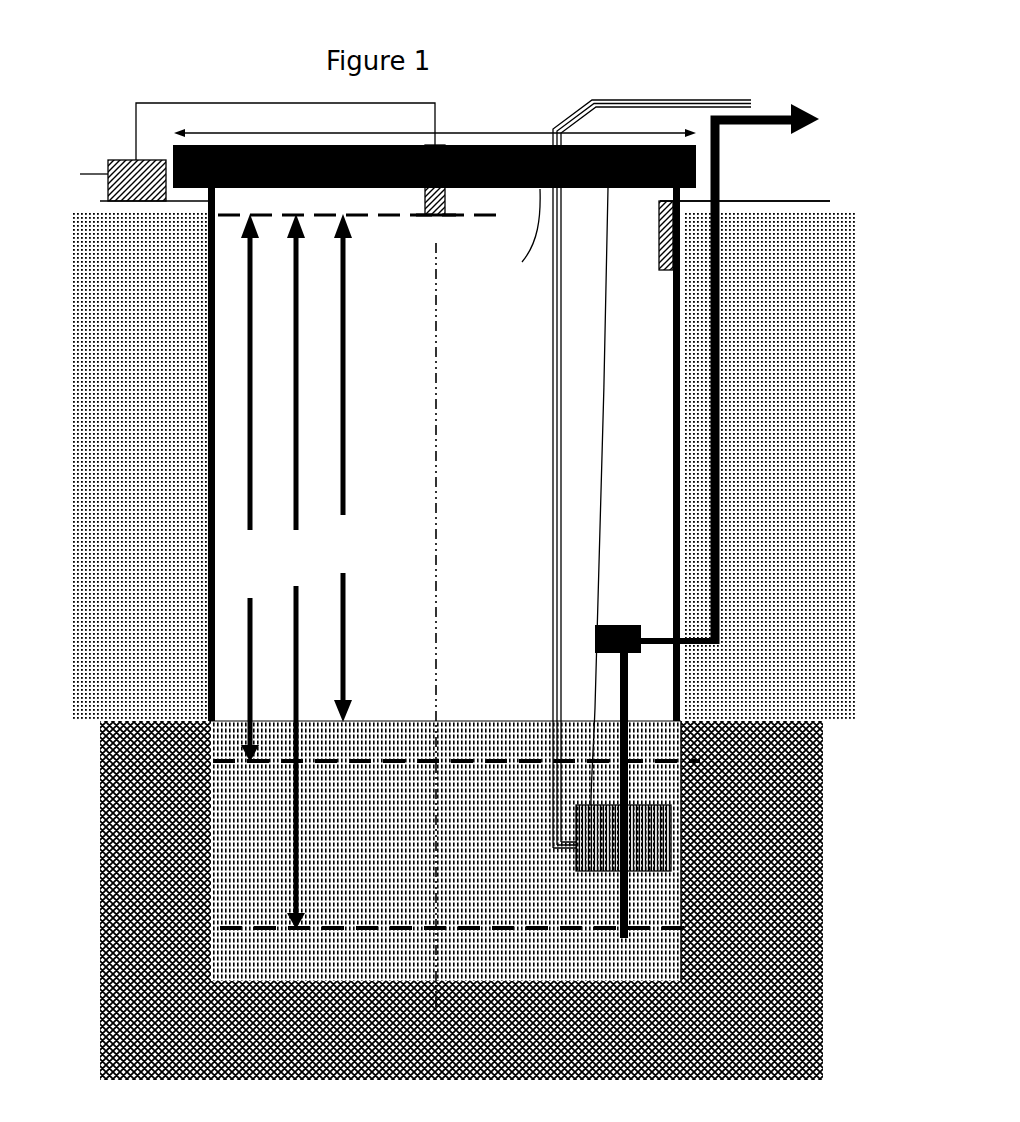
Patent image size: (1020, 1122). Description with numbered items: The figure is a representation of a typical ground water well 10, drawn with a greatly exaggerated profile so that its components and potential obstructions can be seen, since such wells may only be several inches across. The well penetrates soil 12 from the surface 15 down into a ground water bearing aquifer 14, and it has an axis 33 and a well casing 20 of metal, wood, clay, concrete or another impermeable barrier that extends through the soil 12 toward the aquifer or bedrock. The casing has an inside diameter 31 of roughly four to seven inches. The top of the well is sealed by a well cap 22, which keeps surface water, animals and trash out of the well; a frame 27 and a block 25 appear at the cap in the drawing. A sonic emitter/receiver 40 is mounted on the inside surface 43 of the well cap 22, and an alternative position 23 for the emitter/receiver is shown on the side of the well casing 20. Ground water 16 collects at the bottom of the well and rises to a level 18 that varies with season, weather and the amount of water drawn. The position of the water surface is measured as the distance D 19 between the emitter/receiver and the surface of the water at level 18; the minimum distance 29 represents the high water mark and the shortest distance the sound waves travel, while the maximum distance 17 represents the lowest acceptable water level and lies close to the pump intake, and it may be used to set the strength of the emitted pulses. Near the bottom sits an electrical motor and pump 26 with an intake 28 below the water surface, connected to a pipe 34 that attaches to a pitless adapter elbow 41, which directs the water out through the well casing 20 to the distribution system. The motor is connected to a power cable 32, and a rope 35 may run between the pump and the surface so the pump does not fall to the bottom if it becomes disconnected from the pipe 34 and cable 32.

The ground water well 10 is at (540, 57).
The soil 12 is at (824, 206).
The aquifer 14 is at (92, 832).
The surface 15 is at (745, 193).
The ground water 16 is at (455, 730).
The D_MAX 17 is at (291, 368).
The water level 18 is at (364, 712).
The distance D 19 is at (245, 378).
The well casing 20 is at (670, 562).
The well cap 22 is at (165, 142).
The alternative sonic emitter/receiver position 23 is at (656, 262).
The support block 25 is at (104, 152).
The electrical motor and pump 26 is at (652, 827).
The panel frame 27 is at (192, 96).
The intake 28 is at (640, 880).
The D_MIN 29 is at (339, 320).
The inside diameter 31 is at (470, 128).
The power cable 32 is at (640, 93).
The axis 33 is at (431, 340).
The pipe 34 is at (747, 108).
The rope 35 is at (597, 458).
The sonic emitter/receiver 40 is at (438, 190).
The pitless adapter elbow 41 is at (615, 617).
The inside surface 43 is at (523, 243).